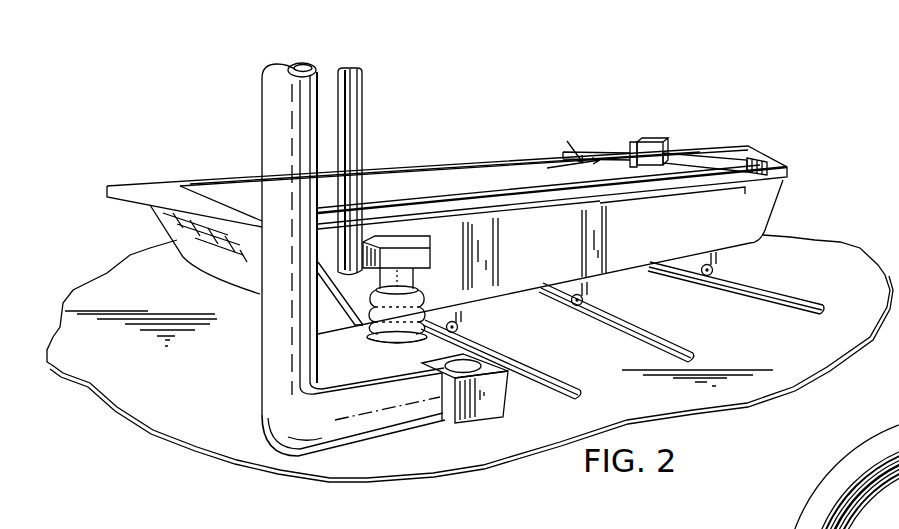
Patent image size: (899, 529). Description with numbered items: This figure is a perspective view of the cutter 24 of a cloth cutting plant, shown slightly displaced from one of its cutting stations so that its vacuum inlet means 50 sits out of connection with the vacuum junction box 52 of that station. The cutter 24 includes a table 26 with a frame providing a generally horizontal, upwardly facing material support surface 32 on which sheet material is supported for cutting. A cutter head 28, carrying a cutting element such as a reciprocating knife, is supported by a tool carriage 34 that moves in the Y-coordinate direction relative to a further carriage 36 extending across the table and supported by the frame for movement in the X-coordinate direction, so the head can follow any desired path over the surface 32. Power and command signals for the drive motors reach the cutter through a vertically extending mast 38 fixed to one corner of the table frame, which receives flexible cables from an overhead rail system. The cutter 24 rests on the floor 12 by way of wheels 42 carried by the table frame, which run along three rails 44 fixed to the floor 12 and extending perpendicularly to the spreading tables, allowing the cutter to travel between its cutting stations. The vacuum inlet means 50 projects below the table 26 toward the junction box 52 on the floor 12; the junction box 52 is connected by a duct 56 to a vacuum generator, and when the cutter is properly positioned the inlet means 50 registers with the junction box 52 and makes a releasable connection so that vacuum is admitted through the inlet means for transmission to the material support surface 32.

The floor 12 is at (812, 263).
The cutter 24 is at (793, 158).
The table 26 is at (763, 197).
The cutter head 28 is at (633, 142).
The material support surface 32 is at (447, 178).
The tool carriage 34 is at (664, 143).
The carriage 36 is at (710, 153).
The mast 38 is at (362, 93).
The wheels 42 is at (462, 323).
The rails 44 is at (543, 367).
The vacuum inlet means 50 is at (359, 341).
The vacuum junction box 52 is at (516, 385).
The duct 56 is at (283, 101).